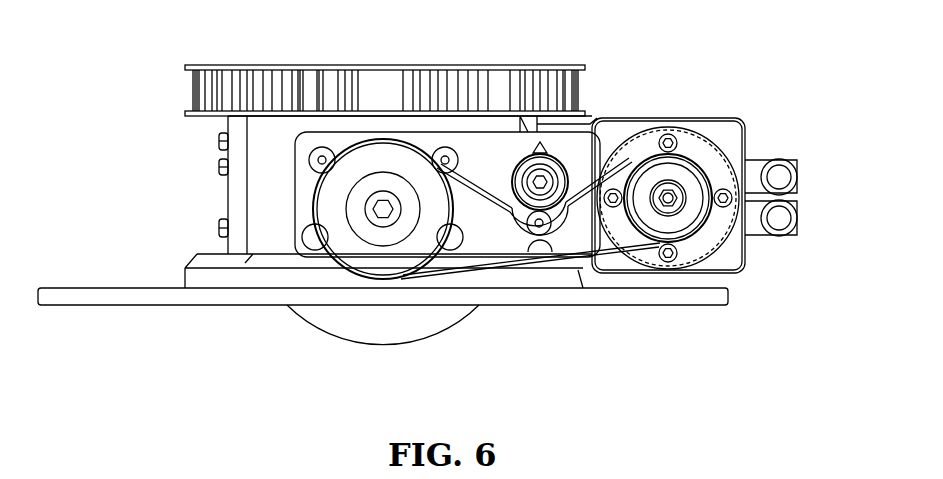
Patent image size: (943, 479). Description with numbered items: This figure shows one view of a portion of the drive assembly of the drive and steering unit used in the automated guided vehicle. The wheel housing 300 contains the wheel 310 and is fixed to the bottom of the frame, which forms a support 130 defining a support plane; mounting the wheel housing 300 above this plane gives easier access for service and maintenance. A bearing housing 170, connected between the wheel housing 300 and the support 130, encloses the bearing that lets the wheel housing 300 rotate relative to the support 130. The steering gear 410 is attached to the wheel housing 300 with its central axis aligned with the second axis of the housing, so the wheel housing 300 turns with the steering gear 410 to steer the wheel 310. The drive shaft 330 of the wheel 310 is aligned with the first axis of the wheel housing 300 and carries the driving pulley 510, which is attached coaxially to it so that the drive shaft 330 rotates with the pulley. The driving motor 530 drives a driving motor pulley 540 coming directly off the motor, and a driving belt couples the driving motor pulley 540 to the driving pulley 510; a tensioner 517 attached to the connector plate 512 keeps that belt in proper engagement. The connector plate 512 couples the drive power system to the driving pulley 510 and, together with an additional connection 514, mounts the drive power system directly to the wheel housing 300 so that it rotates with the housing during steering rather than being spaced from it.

The support 130 is at (205, 297).
The bearing housing 170 is at (357, 261).
The wheel housing 300 is at (270, 173).
The wheel 310 is at (320, 328).
The drive shaft 330 is at (476, 266).
The steering gear 410 is at (351, 74).
The driving pulley 510 is at (422, 155).
The connector plate 512 is at (668, 175).
The additional connection 514 is at (587, 94).
The tensioner 517 is at (503, 131).
The driving motor 530 is at (705, 244).
The driving motor pulley 540 is at (695, 160).